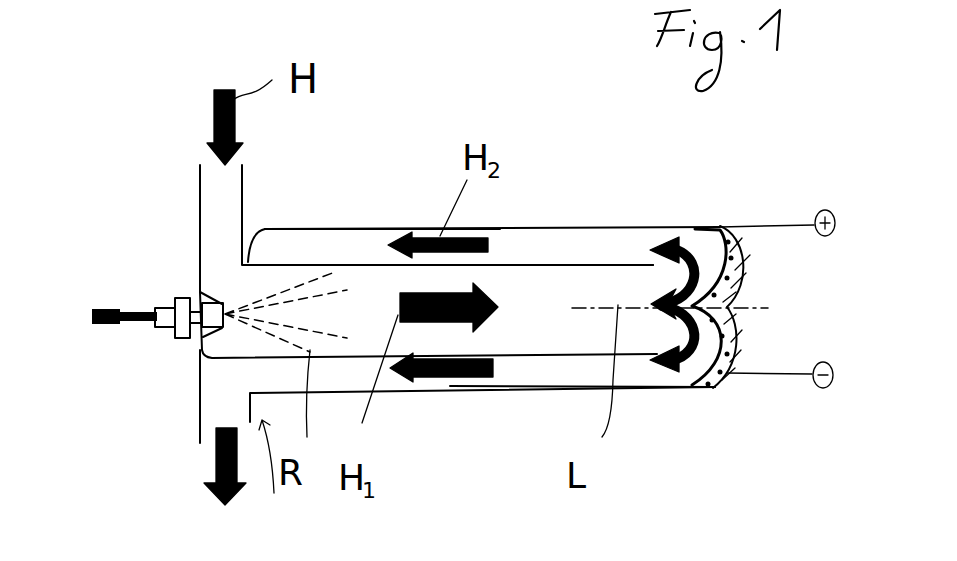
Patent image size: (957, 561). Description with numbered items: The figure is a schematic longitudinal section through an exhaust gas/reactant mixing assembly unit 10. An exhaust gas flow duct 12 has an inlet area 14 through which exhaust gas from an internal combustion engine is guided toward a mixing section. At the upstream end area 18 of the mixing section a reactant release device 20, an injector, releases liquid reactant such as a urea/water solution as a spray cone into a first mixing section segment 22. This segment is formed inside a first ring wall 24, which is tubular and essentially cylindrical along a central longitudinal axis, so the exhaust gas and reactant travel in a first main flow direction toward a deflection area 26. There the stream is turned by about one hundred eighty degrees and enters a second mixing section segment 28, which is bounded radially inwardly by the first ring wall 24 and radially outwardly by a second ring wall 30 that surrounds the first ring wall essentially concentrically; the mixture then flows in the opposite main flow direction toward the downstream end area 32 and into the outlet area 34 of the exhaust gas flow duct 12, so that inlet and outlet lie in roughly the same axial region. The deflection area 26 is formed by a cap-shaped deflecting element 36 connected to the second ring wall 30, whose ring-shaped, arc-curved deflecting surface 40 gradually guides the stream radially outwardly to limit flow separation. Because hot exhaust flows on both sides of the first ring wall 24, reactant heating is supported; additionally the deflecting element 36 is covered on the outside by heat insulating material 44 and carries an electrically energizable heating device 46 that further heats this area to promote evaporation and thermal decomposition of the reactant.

The exhaust gas/reactant mixing assembly unit 10 is at (511, 96).
The exhaust gas flow duct 12 is at (225, 238).
The inlet area 14 is at (200, 195).
The upstream end area 18 is at (186, 370).
The reactant release device 20 is at (173, 337).
The first mixing section segment 22 is at (525, 337).
The first ring wall 24 is at (505, 265).
The deflection area 26 is at (675, 433).
The second mixing section segment 28 is at (562, 252).
The second ring wall 30 is at (350, 228).
The downstream end area 32 is at (244, 494).
The outlet area 34 is at (200, 433).
The deflecting element 36 is at (728, 318).
The deflecting surface 40 is at (702, 242).
The heat insulating material 44 is at (733, 285).
The heating device 46 is at (733, 299).